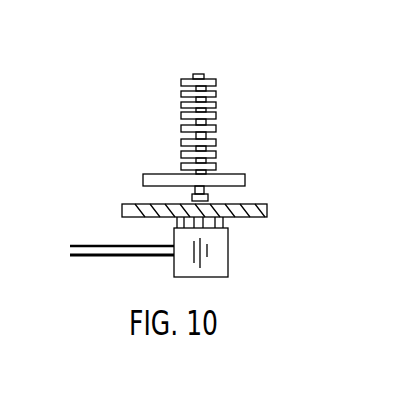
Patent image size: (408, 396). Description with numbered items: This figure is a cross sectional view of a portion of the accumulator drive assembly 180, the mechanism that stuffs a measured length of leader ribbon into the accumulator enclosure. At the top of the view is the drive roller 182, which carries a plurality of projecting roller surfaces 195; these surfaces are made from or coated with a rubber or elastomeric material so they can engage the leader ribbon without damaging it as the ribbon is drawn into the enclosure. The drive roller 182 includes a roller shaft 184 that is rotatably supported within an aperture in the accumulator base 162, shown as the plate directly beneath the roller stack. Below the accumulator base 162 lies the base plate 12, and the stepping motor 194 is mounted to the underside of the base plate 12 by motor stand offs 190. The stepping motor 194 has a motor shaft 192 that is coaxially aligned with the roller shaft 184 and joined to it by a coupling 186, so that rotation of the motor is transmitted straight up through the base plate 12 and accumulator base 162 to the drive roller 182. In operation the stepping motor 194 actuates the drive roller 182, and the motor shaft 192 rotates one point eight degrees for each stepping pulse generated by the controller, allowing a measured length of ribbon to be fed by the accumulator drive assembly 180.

The accumulator drive assembly 180 is at (262, 124).
The drive roller 182 is at (212, 78).
The roller shaft 184 is at (200, 74).
The projecting roller surfaces 195 is at (181, 93).
The accumulator base 162 is at (237, 181).
The coupling 186 is at (194, 192).
The motor shaft 192 is at (208, 198).
The base plate 12 is at (267, 213).
The motor stand offs 190 is at (223, 224).
The stepping motor 194 is at (222, 261).